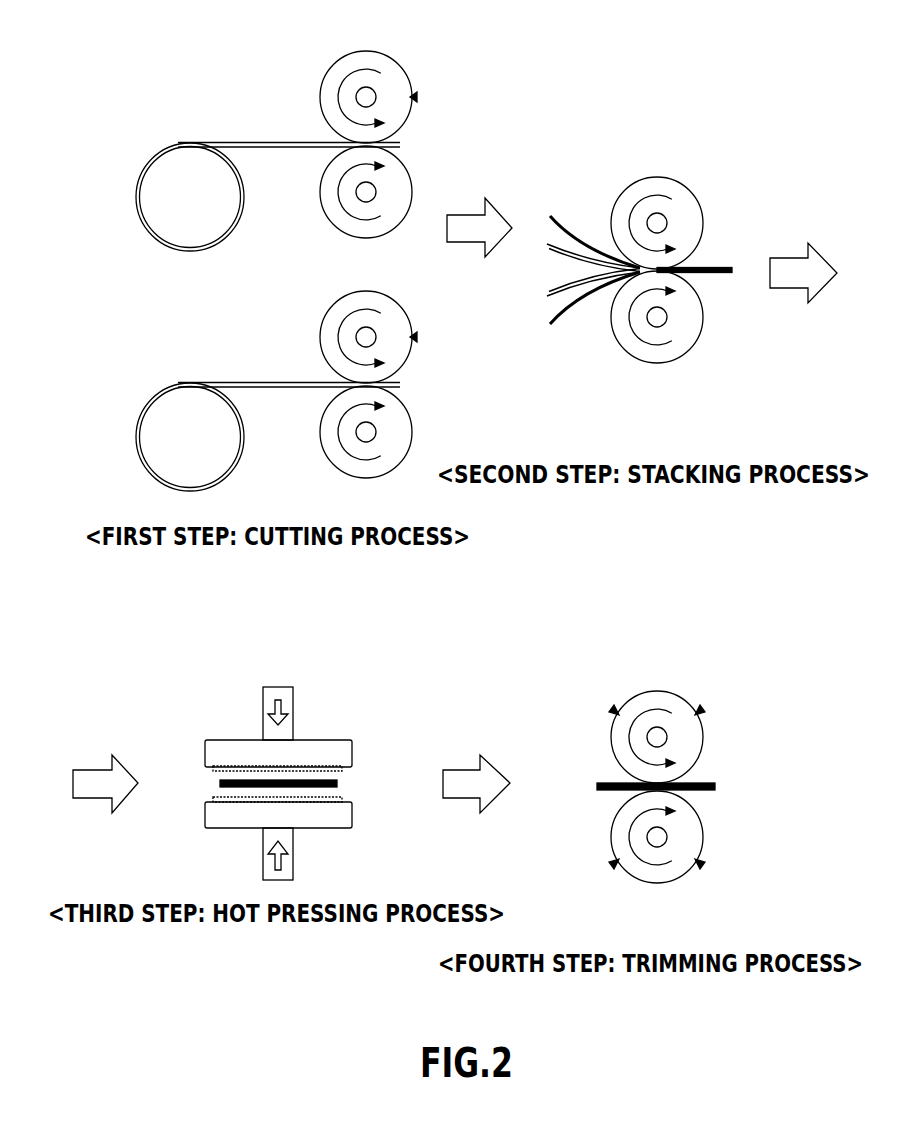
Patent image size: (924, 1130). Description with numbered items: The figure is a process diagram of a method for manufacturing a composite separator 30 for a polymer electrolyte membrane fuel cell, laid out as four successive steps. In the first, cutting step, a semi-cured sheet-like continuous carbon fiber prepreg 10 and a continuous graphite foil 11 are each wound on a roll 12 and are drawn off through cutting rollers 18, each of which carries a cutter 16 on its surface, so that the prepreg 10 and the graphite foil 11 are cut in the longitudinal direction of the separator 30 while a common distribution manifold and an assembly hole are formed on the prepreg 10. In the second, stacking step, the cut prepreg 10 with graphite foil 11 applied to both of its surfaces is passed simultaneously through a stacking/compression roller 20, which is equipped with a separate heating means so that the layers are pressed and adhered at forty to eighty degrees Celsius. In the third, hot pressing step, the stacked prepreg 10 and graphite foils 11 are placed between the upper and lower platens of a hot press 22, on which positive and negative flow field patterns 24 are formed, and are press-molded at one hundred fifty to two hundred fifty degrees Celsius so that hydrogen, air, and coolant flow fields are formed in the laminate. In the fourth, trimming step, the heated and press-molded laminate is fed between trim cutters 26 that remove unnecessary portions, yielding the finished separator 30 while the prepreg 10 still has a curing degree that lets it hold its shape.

The continuous carbon fiber prepreg 10 is at (285, 138).
The graphite foil 11 is at (285, 378).
The roll 12 is at (172, 167).
The cutter 16 is at (417, 96).
The cutting roller 18 is at (393, 75).
The stacking/compression roller 20 is at (703, 203).
The hot press 22 is at (316, 735).
The positive and negative flow field patterns 24 is at (333, 774).
The trim cutter 26 is at (705, 735).
The separator 30 is at (715, 785).